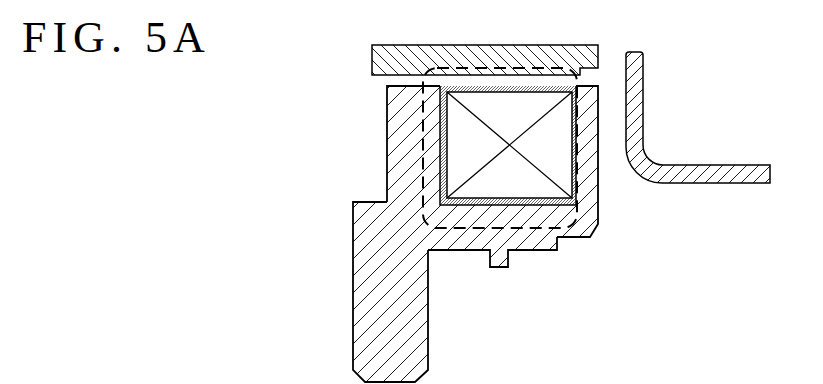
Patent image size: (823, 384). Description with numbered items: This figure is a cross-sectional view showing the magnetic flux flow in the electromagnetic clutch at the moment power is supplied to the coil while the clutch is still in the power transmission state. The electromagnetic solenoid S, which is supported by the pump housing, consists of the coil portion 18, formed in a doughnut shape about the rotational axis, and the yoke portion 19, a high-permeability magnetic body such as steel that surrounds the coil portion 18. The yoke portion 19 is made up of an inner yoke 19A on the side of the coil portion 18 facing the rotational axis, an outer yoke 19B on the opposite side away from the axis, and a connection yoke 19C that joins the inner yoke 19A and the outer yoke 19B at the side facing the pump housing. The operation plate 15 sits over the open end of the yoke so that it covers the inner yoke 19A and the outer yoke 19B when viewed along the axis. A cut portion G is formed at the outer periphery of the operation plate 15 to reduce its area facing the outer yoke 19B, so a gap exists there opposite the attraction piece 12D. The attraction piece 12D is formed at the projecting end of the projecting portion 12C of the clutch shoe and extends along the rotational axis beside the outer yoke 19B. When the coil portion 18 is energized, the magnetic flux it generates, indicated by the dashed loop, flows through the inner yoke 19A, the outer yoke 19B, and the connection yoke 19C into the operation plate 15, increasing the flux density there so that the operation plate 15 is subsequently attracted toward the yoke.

The operation plate 15 is at (402, 52).
The coil portion 18 is at (505, 100).
The yoke portion 19 is at (380, 174).
The inner yoke 19A is at (394, 138).
The outer yoke 19B is at (590, 176).
The connection yoke 19C is at (468, 238).
The electromagnetic solenoid S is at (352, 100).
The cut portion G is at (600, 71).
The attraction piece 12D is at (638, 108).
The projecting portion 12C is at (733, 166).